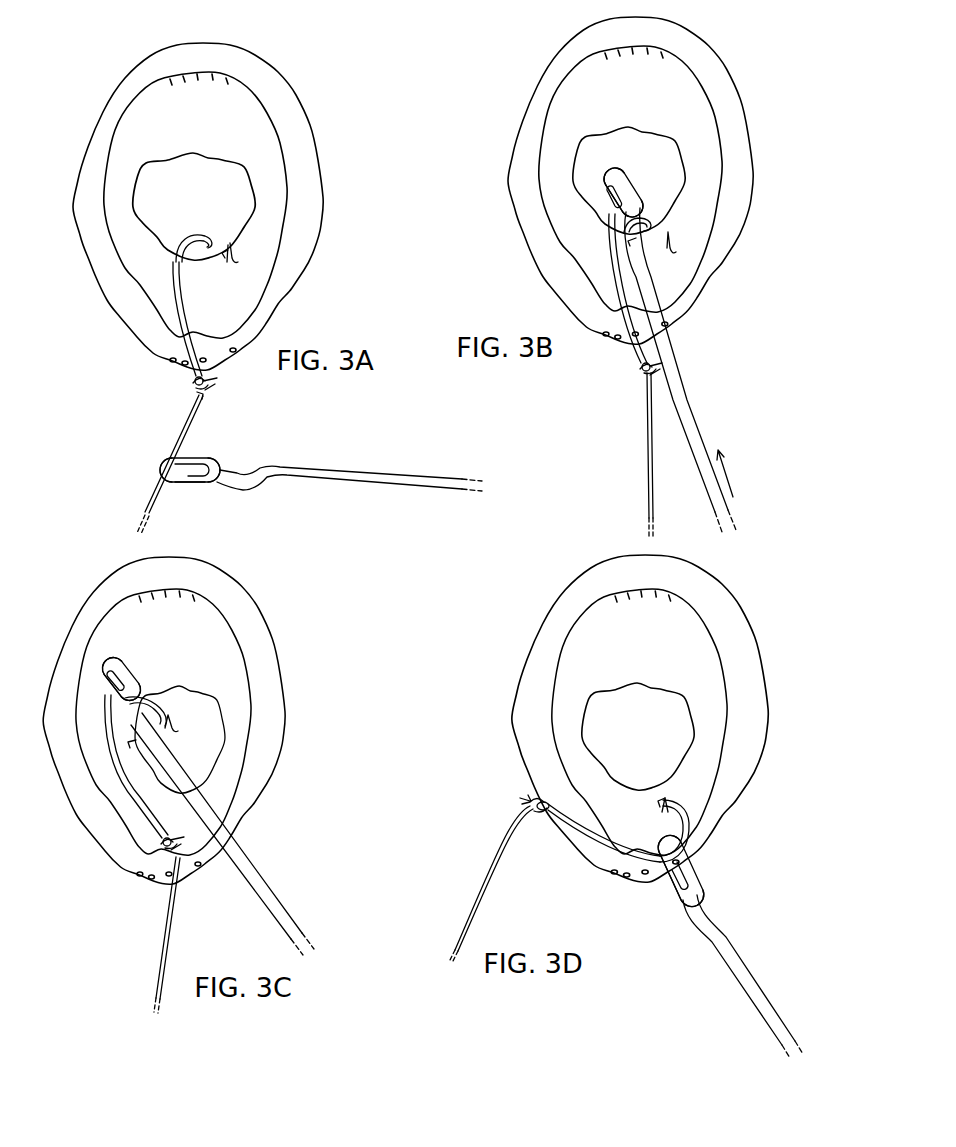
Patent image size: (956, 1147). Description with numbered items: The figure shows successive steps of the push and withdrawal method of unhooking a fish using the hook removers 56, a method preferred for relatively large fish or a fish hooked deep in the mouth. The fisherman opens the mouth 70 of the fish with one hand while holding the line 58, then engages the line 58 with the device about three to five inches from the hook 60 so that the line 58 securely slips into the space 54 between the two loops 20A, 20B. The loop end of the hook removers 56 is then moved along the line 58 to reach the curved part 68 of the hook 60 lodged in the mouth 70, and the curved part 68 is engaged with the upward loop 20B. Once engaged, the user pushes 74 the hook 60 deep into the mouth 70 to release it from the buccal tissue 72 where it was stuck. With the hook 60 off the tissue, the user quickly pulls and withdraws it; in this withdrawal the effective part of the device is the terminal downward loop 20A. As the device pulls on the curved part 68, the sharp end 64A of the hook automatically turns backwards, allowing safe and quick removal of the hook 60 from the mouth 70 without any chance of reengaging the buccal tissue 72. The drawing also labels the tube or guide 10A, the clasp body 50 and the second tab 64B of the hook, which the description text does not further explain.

In FIG. 3A, the tube / guide 10A is at (372, 476).
In FIG. 3B, the tube / guide 10A is at (680, 403).
In FIG. 3C, the tube / guide 10A is at (250, 857).
In FIG. 3D, the tube / guide 10A is at (743, 972).
In FIG. 3A, the terminal downward loop 20A is at (160, 464).
In FIG. 3B, the terminal downward loop 20A is at (613, 180).
In FIG. 3C, the terminal downward loop 20A is at (112, 662).
In FIG. 3D, the terminal downward loop 20A is at (667, 863).
In FIG. 3A, the upward loop 20B is at (223, 470).
In FIG. 3B, the upward loop 20B is at (617, 230).
In FIG. 3C, the upward loop 20B is at (155, 700).
In FIG. 3D, the upward loop 20B is at (693, 900).
In FIG. 3A, the clasp body 50 is at (185, 483).
In FIG. 3B, the clasp body 50 is at (603, 203).
In FIG. 3C, the clasp body 50 is at (108, 698).
In FIG. 3D, the clasp body 50 is at (667, 877).
In FIG. 3A, the space between loops 54 is at (180, 472).
In FIG. 3B, the space between loops 54 is at (613, 197).
In FIG. 3C, the space between loops 54 is at (120, 687).
In FIG. 3D, the space between loops 54 is at (695, 895).
In FIG. 3A, the hook removers 56 is at (206, 442).
In FIG. 3B, the hook removers 56 is at (651, 181).
In FIG. 3C, the hook removers 56 is at (149, 669).
In FIG. 3D, the hook removers 56 is at (704, 851).
In FIG. 3A, the line 58 is at (185, 432).
In FIG. 3B, the line 58 is at (650, 443).
In FIG. 3C, the line 58 is at (170, 937).
In FIG. 3D, the line 58 is at (490, 873).
In FIG. 3A, the hook 60 is at (183, 297).
In FIG. 3B, the hook 60 is at (613, 287).
In FIG. 3C, the hook 60 is at (140, 790).
In FIG. 3D, the hook 60 is at (587, 837).
In FIG. 3A, the sharp end of the hook 64A is at (236, 257).
In FIG. 3B, the sharp end of the hook 64A is at (670, 250).
In FIG. 3C, the sharp end of the hook 64A is at (173, 727).
In FIG. 3D, the sharp end of the hook 64A is at (667, 813).
In FIG. 3A, the second tab 64B is at (228, 254).
In FIG. 3B, the second tab 64B is at (633, 243).
In FIG. 3C, the second tab 64B is at (130, 745).
In FIG. 3D, the second tab 64B is at (665, 813).
In FIG. 3A, the curved part of the hook 68 is at (197, 240).
In FIG. 3B, the curved part of the hook 68 is at (633, 223).
In FIG. 3C, the curved part of the hook 68 is at (153, 703).
In FIG. 3D, the curved part of the hook 68 is at (689, 832).
In FIG. 3A, the mouth of the fish 70 is at (309, 85).
In FIG. 3B, the mouth of the fish 70 is at (517, 62).
In FIG. 3C, the mouth of the fish 70 is at (300, 670).
In FIG. 3D, the mouth of the fish 70 is at (515, 626).
In FIG. 3A, the buccal tissue 72 is at (220, 240).
In FIG. 3B, the buccal tissue 72 is at (657, 220).
In FIG. 3C, the buccal tissue 72 is at (197, 753).
In FIG. 3D, the buccal tissue 72 is at (660, 753).
In FIG. 3B, the push 74 is at (720, 464).